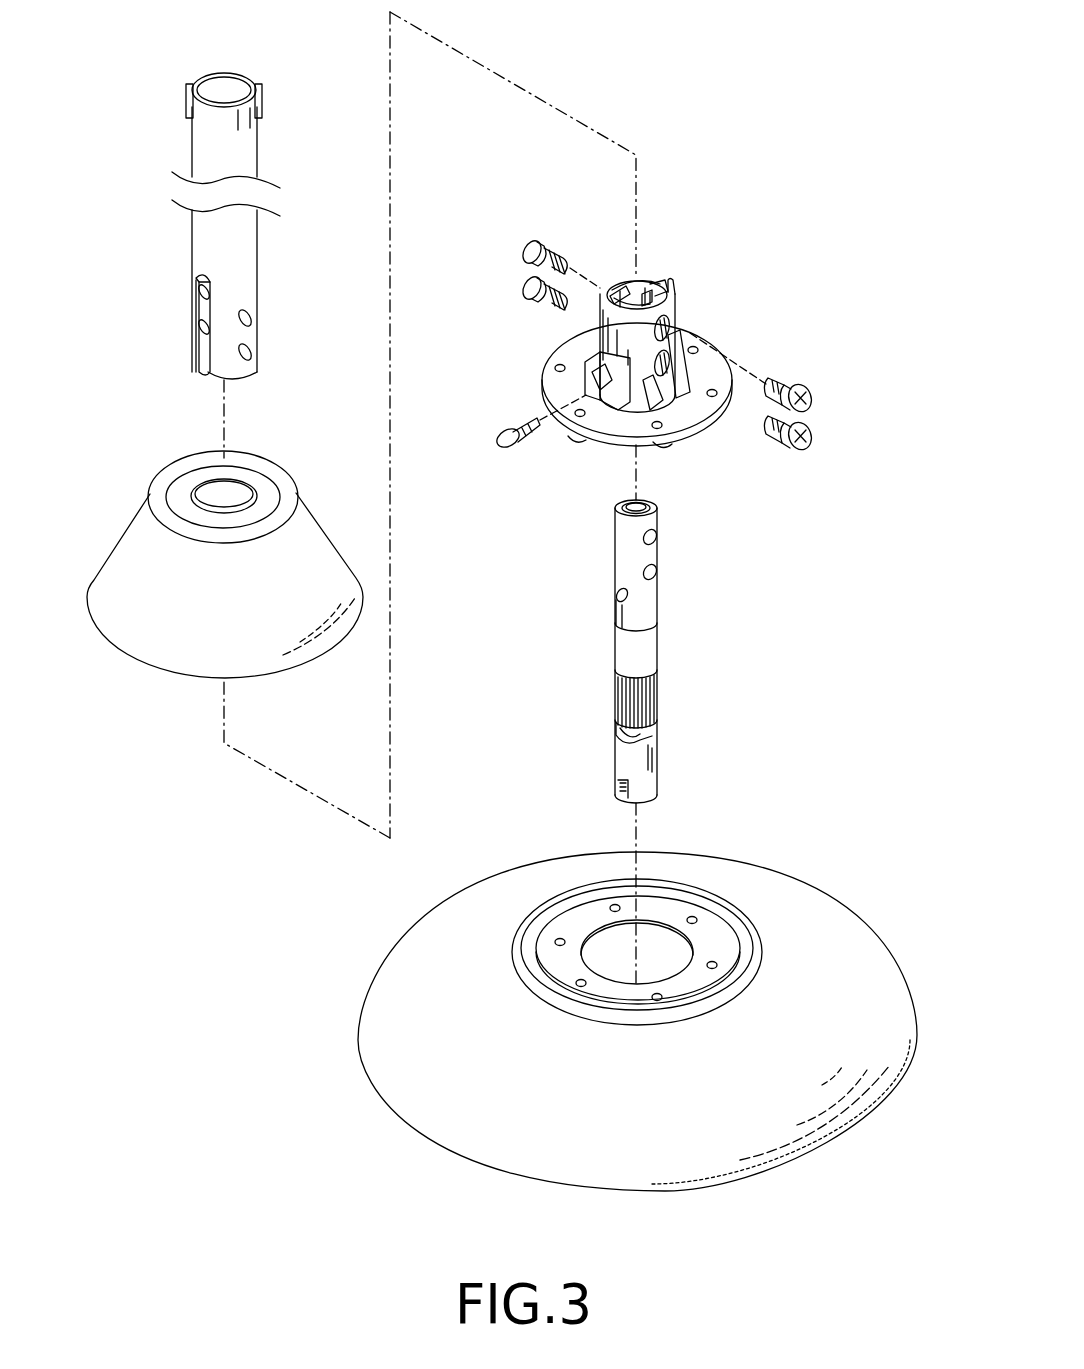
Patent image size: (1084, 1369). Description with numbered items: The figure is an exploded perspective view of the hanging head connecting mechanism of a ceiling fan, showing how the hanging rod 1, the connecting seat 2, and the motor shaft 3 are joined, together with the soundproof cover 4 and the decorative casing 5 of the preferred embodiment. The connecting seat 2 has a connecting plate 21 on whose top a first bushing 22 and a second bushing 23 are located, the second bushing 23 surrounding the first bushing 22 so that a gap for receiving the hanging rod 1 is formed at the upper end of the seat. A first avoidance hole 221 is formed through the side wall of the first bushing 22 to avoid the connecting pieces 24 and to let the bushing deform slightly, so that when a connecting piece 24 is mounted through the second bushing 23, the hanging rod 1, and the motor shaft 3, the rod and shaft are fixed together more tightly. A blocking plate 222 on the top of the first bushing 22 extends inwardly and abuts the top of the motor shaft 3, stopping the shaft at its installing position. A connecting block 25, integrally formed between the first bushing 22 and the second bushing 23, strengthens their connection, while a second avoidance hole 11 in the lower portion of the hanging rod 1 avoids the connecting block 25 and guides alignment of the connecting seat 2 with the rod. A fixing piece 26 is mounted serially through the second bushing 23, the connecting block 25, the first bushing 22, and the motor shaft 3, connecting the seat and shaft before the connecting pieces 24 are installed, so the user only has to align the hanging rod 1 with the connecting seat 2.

The hanging rod 1 is at (212, 152).
The second avoidance hole 11 is at (207, 362).
The connecting seat 2 is at (452, 130).
The connecting plate 21 is at (558, 385).
The first bushing 22 is at (608, 282).
The first avoidance hole 221 is at (650, 297).
The blocking plate 222 is at (648, 288).
The second bushing 23 is at (612, 316).
The connecting pieces 24 is at (560, 262).
The connecting block 25 is at (612, 288).
The fixing piece 26 is at (522, 428).
The motor shaft 3 is at (655, 757).
The soundproof cover 4 is at (416, 982).
The decorative casing 5 is at (293, 566).